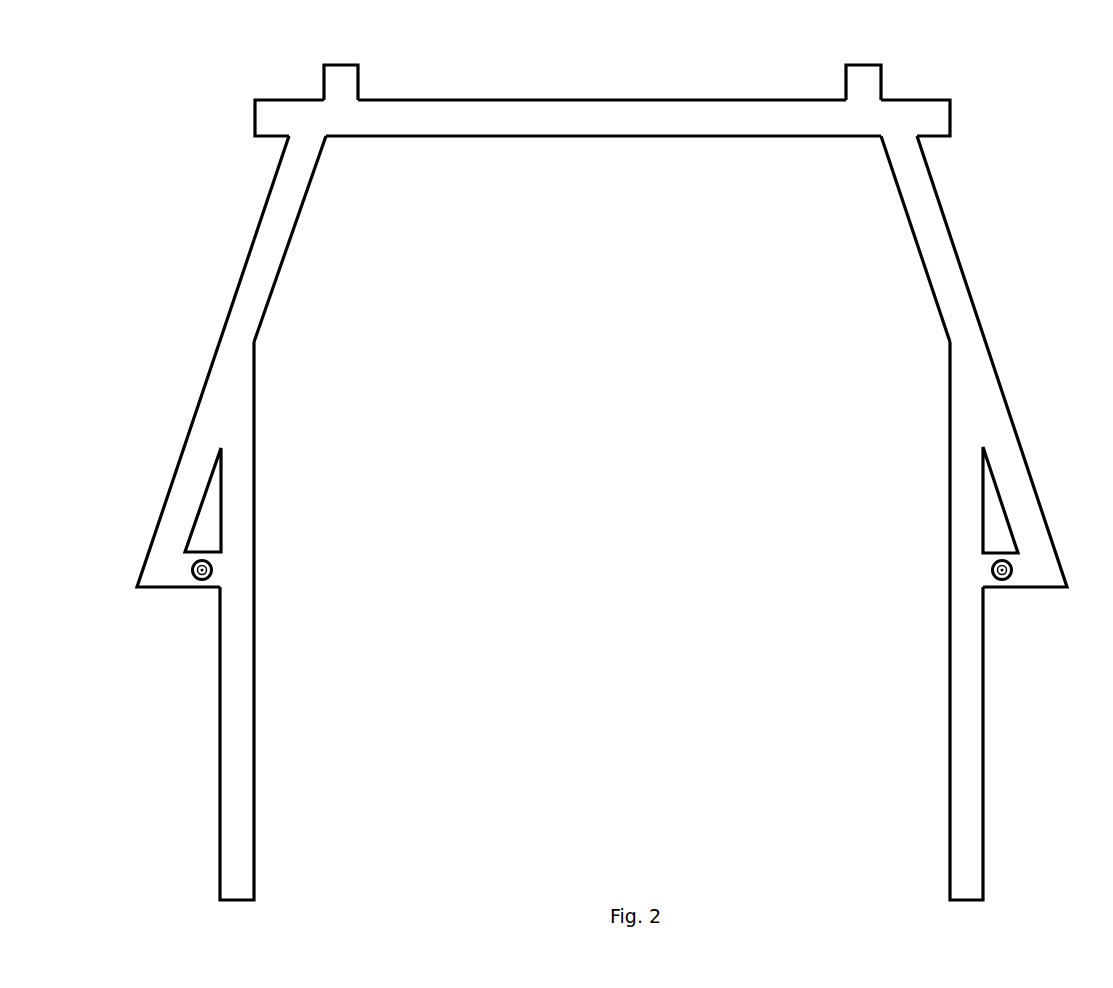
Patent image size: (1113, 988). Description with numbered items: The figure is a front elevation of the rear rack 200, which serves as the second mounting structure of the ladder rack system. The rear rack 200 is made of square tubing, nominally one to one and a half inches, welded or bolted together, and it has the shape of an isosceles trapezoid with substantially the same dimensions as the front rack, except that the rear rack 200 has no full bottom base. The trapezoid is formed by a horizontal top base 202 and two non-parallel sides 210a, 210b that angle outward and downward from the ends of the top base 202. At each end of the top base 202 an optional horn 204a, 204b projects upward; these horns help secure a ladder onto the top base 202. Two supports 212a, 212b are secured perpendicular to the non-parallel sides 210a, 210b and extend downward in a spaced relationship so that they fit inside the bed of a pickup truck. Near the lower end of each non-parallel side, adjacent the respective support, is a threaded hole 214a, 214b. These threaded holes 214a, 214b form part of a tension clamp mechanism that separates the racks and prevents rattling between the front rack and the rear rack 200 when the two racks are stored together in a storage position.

The rear rack 200 is at (569, 469).
The top base 202 is at (575, 122).
The horn 204a is at (342, 83).
The horn 204b is at (860, 87).
The non-parallel side 210a is at (232, 362).
The non-parallel side 210b is at (978, 362).
The support 212a is at (240, 776).
The support 212b is at (967, 775).
The threaded hole 214a is at (200, 580).
The threaded hole 214b is at (1002, 580).